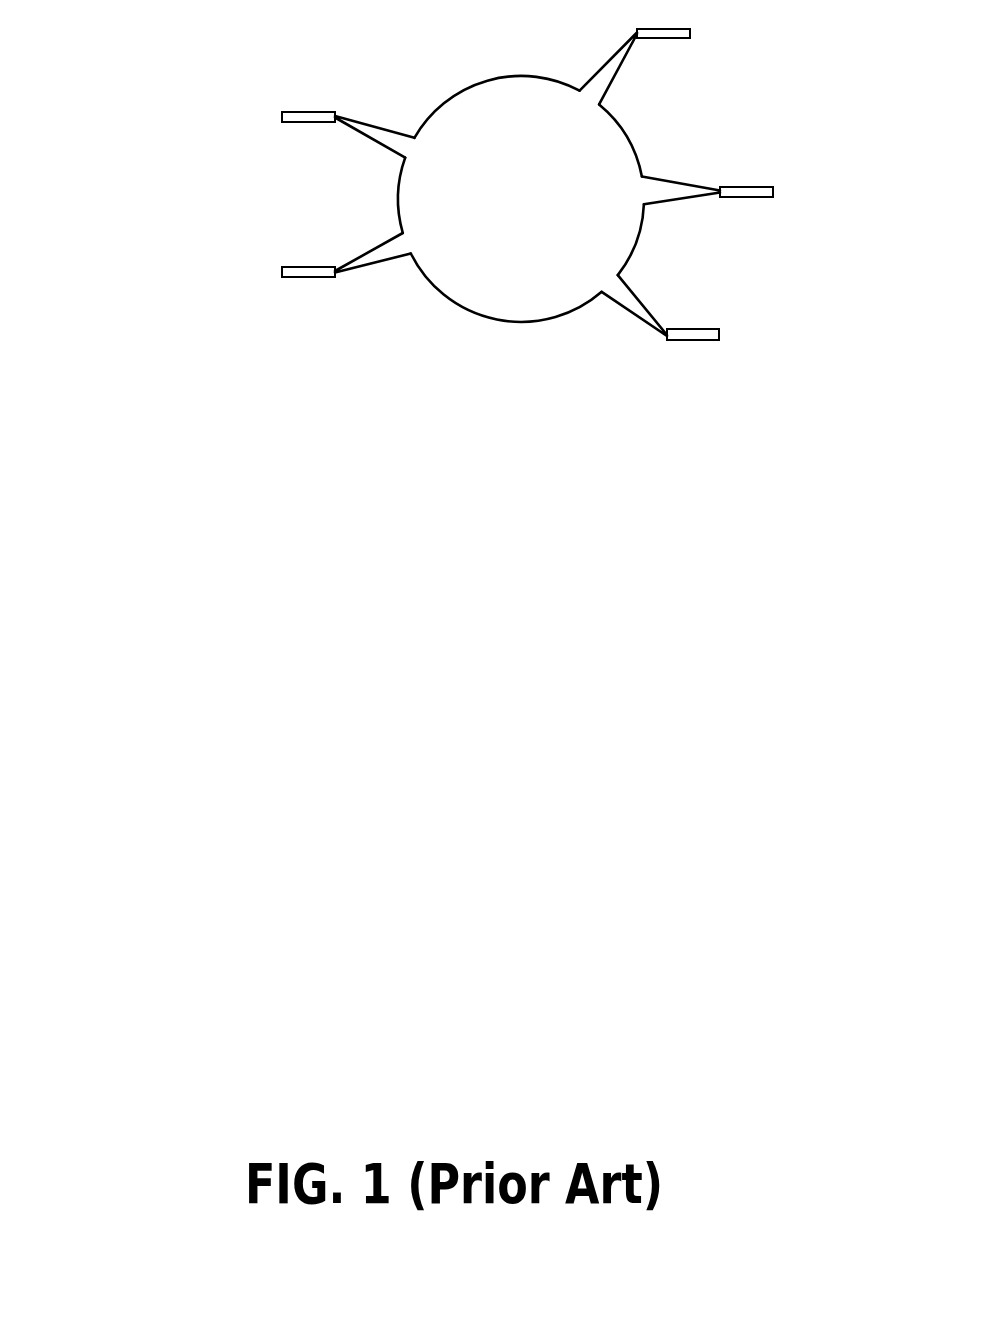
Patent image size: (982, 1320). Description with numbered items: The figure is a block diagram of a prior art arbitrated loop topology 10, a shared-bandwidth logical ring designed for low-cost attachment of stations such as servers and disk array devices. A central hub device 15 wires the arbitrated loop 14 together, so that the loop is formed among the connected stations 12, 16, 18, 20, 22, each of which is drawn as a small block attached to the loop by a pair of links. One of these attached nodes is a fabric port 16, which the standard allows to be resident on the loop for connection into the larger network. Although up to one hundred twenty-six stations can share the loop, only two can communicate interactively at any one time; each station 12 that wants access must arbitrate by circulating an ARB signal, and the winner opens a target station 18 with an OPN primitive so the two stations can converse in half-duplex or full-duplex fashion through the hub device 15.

The arbitrated loop topology 10 is at (108, 98).
The station 12 is at (282, 117).
The arbitrated loop 14 is at (397, 195).
The hub device 15 is at (534, 213).
The fabric port 16 is at (719, 335).
The station 18 is at (282, 272).
The station 20 is at (690, 33).
The station 22 is at (822, 203).